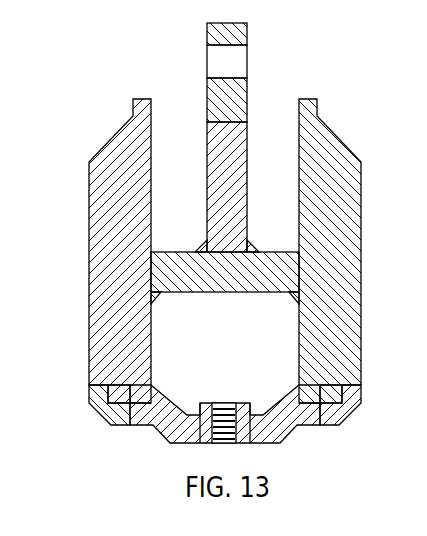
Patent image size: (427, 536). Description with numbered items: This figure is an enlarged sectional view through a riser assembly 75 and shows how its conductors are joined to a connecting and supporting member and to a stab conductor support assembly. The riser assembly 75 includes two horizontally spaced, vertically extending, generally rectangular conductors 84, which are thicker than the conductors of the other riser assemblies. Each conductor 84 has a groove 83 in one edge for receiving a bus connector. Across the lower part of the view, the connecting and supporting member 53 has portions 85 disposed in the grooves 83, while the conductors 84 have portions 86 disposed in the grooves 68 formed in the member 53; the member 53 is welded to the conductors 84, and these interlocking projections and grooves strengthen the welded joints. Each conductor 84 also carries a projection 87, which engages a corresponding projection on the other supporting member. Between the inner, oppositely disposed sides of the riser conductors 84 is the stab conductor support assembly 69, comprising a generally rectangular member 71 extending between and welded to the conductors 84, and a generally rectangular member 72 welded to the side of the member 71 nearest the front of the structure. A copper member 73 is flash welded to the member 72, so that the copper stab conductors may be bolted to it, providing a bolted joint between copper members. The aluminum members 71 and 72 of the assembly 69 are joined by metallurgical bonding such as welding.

The connecting and supporting member 53 is at (178, 428).
The grooves 68 is at (131, 420).
The stab conductor support assembly 69 is at (190, 130).
The generally rectangular member 71 is at (181, 262).
The generally rectangular member 72 is at (248, 160).
The copper member 73 is at (247, 37).
The riser assembly 75 is at (236, 322).
The groove 83 is at (229, 402).
The conductors 84 is at (96, 273).
The portions 85 is at (92, 386).
The portions 86 is at (137, 393).
The projection 87 is at (141, 98).